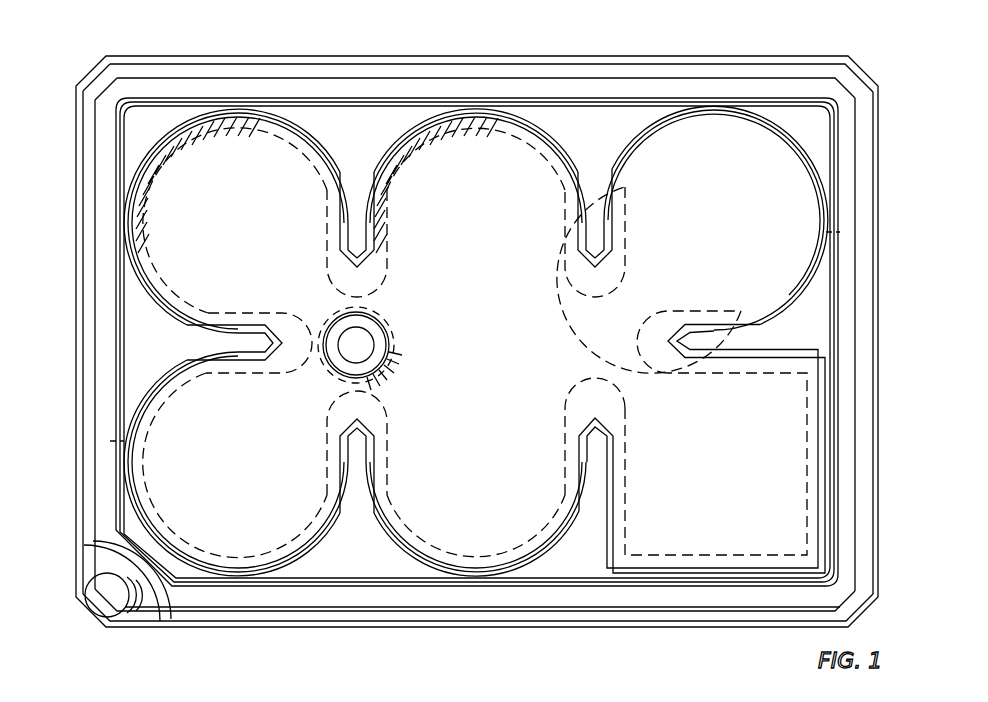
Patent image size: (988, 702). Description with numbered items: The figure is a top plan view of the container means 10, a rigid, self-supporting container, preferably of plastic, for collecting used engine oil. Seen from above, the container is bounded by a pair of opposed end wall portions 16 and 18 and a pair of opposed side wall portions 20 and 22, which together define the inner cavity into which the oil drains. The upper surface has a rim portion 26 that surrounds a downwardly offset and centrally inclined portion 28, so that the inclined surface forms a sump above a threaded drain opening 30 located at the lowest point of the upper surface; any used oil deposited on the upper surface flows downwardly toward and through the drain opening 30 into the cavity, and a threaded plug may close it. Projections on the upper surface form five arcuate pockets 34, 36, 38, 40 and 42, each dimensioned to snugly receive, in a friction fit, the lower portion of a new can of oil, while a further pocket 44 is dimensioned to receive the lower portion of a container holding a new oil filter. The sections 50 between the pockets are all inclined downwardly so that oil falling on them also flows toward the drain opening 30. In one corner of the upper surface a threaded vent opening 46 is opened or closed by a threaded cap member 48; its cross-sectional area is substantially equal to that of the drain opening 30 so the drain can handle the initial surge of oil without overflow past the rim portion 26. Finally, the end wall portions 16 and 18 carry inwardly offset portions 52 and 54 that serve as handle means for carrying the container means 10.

The container means 10 is at (60, 80).
The end wall portion 16 is at (77, 140).
The end wall portion 18 is at (880, 298).
The side wall portion 20 is at (456, 56).
The side wall portion 22 is at (472, 626).
The rim portion 26 is at (233, 598).
The downwardly offset and centrally inclined portion 28 is at (333, 572).
The drain opening 30 is at (386, 344).
The arcuate pocket 34 is at (244, 226).
The arcuate pocket 36 is at (254, 501).
The arcuate pocket 38 is at (492, 220).
The arcuate pocket 40 is at (504, 494).
The arcuate pocket 42 is at (742, 254).
The pocket 44 is at (736, 484).
The vent opening 46 is at (125, 561).
The cap member 48 is at (110, 604).
The sections between the pockets 50 is at (378, 144).
The inwardly offset portion 52 is at (122, 441).
The inwardly offset portion 54 is at (833, 232).